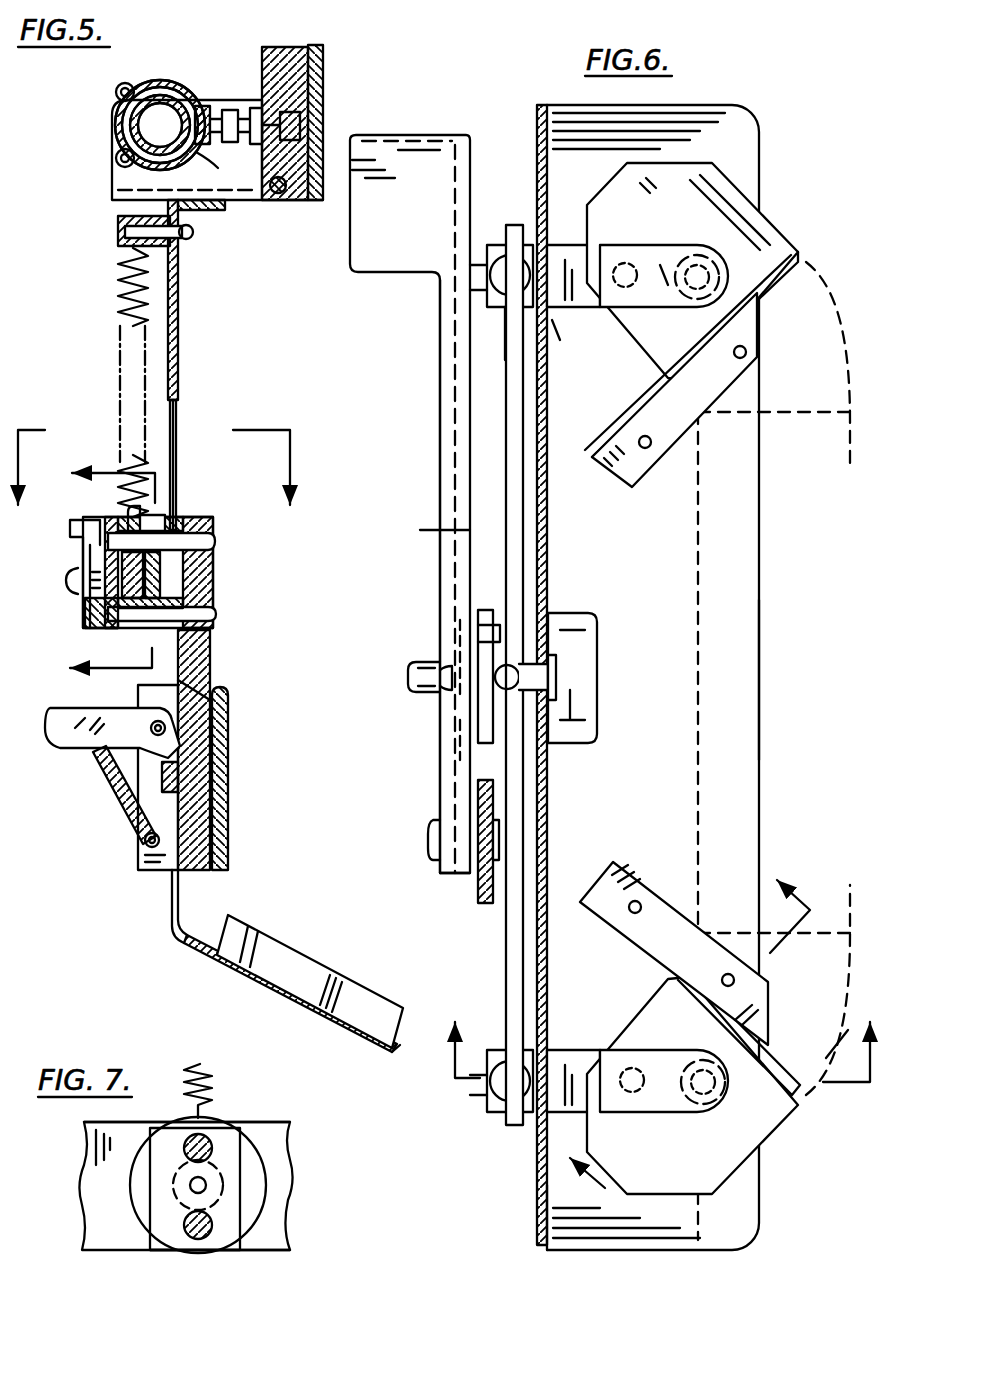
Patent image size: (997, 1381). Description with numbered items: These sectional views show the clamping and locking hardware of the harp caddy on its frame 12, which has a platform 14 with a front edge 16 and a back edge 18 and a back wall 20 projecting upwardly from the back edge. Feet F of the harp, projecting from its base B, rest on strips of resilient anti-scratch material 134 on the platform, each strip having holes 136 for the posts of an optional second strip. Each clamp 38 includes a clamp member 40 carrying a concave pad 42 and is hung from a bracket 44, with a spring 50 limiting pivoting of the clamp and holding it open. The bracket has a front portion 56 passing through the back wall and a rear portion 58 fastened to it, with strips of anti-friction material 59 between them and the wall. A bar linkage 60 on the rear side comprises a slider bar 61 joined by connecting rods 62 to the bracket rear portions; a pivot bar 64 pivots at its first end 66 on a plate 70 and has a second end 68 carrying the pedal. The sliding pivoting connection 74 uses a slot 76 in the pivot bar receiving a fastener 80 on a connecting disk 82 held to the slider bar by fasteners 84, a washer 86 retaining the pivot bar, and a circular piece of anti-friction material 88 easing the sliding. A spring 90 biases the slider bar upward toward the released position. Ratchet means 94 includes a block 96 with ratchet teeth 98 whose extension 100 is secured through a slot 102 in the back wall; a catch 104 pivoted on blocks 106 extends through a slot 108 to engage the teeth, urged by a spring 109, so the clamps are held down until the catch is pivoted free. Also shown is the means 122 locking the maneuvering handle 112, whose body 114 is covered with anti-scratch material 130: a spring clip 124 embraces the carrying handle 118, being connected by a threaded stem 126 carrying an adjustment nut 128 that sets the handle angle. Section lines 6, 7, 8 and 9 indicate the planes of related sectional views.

In FIG. 5, the frame 12 is at (182, 360).
In FIG. 5, the platform 14 is at (236, 972).
In FIG. 6, the platform 14 is at (752, 122).
In FIG. 5, the front edge 16 is at (392, 1056).
In FIG. 6, the front edge 16 is at (760, 672).
In FIG. 5, the back edge 18 is at (182, 940).
In FIG. 6, the back edge 18 is at (546, 1188).
In FIG. 5, the back wall 20 is at (179, 316).
In FIG. 6, the back wall 20 is at (537, 152).
In FIG. 6, the clamp 38 is at (748, 204).
In FIG. 6, the clamp member 40 is at (742, 228).
In FIG. 6, the pad 42 is at (778, 1064).
In FIG. 6, the bracket 44 is at (580, 245).
In FIG. 6, the spring 50 is at (640, 262).
In FIG. 6, the front portion 56 is at (614, 310).
In FIG. 6, the rear portion 58 is at (487, 300).
In FIG. 6, the strip of anti-friction material 59 is at (556, 338).
In FIG. 6, the bar linkage 60 is at (404, 792).
In FIG. 5, the slider bar 61 is at (162, 516).
In FIG. 7, the slider bar 61 is at (228, 1148).
In FIG. 6, the slider bar 61 is at (507, 455).
In FIG. 6, the connecting rod 62 is at (495, 245).
In FIG. 5, the pivot bar 64 is at (105, 522).
In FIG. 7, the pivot bar 64 is at (280, 1252).
In FIG. 6, the pivot bar 64 is at (440, 410).
In FIG. 6, the first end 66 is at (440, 868).
In FIG. 6, the second end 68 is at (462, 135).
In FIG. 6, the plate 70 is at (495, 814).
In FIG. 5, the sliding pivoting connection 74 is at (60, 612).
In FIG. 7, the sliding pivoting connection 74 is at (132, 1258).
In FIG. 7, the slot 76 is at (96, 1182).
In FIG. 5, the fastener 80 is at (70, 580).
In FIG. 6, the fastener 80 is at (440, 702).
In FIG. 5, the connecting disk 82 is at (120, 512).
In FIG. 7, the connecting disk 82 is at (255, 1178).
In FIG. 6, the connecting disk 82 is at (478, 604).
In FIG. 5, the fasteners 84 is at (216, 550).
In FIG. 7, the fasteners 84 is at (208, 1138).
In FIG. 5, the washer 86 is at (83, 552).
In FIG. 6, the washer 86 is at (452, 642).
In FIG. 5, the circular piece of anti-friction material 88 is at (88, 638).
In FIG. 6, the circular piece of anti-friction material 88 is at (398, 150).
In FIG. 5, the spring 90 is at (125, 300).
In FIG. 7, the spring 90 is at (206, 1072).
In FIG. 6, the spring 90 is at (517, 665).
In FIG. 5, the ratchet means 94 is at (100, 780).
In FIG. 5, the block 96 is at (228, 712).
In FIG. 5, the ratchet teeth 98 is at (148, 826).
In FIG. 5, the extension 100 is at (212, 526).
In FIG. 6, the extension 100 is at (590, 670).
In FIG. 5, the slot 102 is at (178, 434).
In FIG. 5, the catch 104 is at (58, 730).
In FIG. 6, the catch 104 is at (412, 678).
In FIG. 5, the blocks 106 is at (135, 872).
In FIG. 5, the slot 108 is at (204, 694).
In FIG. 5, the spring 109 is at (108, 796).
In FIG. 5, the maneuvering handle 112 is at (304, 214).
In FIG. 5, the body 114 is at (310, 50).
In FIG. 5, the carrying handle 118 is at (116, 124).
In FIG. 5, the means 122 is at (185, 70).
In FIG. 5, the spring clip 124 is at (122, 84).
In FIG. 5, the threaded stem 126 is at (230, 106).
In FIG. 5, the adjustment nut 128 is at (196, 152).
In FIG. 5, the anti-scratch material 130 is at (320, 78).
In FIG. 5, the strip of resilient anti-scratch material 134 is at (298, 942).
In FIG. 6, the strip of resilient anti-scratch material 134 is at (648, 478).
In FIG. 6, the holes 136 is at (655, 424).
In FIG. 5, the section line 6- 6 is at (151, 487).
In FIG. 5, the section line 7- 7 is at (99, 578).
In FIG. 6, the section line 8- 8 is at (658, 1029).
In FIG. 6, the section line 9- 9 is at (690, 1015).
In FIG. 6, the base B is at (698, 612).
In FIG. 6, the feet F is at (815, 285).